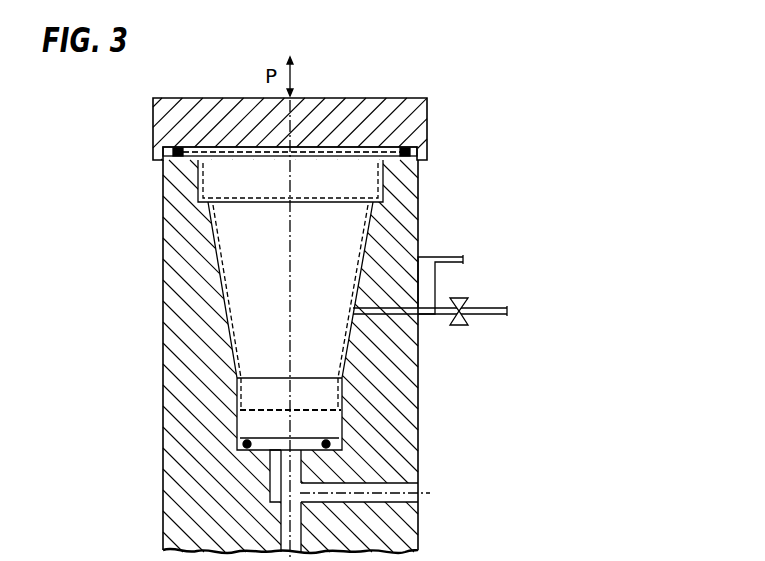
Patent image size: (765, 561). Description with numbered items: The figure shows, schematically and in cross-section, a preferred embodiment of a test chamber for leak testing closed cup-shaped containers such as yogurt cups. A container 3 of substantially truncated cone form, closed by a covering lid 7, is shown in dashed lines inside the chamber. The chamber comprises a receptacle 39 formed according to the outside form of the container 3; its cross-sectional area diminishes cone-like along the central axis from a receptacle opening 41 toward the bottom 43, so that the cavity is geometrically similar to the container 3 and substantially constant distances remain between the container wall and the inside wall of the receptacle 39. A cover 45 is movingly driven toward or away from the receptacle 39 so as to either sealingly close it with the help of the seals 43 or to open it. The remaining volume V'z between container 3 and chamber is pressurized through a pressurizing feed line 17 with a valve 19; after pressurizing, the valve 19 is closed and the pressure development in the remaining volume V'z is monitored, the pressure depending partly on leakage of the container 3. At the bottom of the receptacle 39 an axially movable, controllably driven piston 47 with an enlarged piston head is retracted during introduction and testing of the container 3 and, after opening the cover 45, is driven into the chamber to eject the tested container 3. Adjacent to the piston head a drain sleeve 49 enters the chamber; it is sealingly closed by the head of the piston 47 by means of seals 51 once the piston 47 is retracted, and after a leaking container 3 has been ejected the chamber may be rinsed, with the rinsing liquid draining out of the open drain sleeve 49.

The container 3 is at (367, 258).
The covering lid 7 is at (258, 147).
The remaining volume V'z is at (291, 96).
The pressurizing feed line 17 is at (485, 307).
The valve 19 is at (460, 327).
The receptacle 39 is at (183, 321).
The receptacle opening 41 is at (333, 178).
The seals 43 is at (403, 147).
The cover 45 is at (172, 124).
The piston 47 is at (323, 425).
The drain sleeve 49 is at (273, 473).
The seals 51 is at (243, 443).